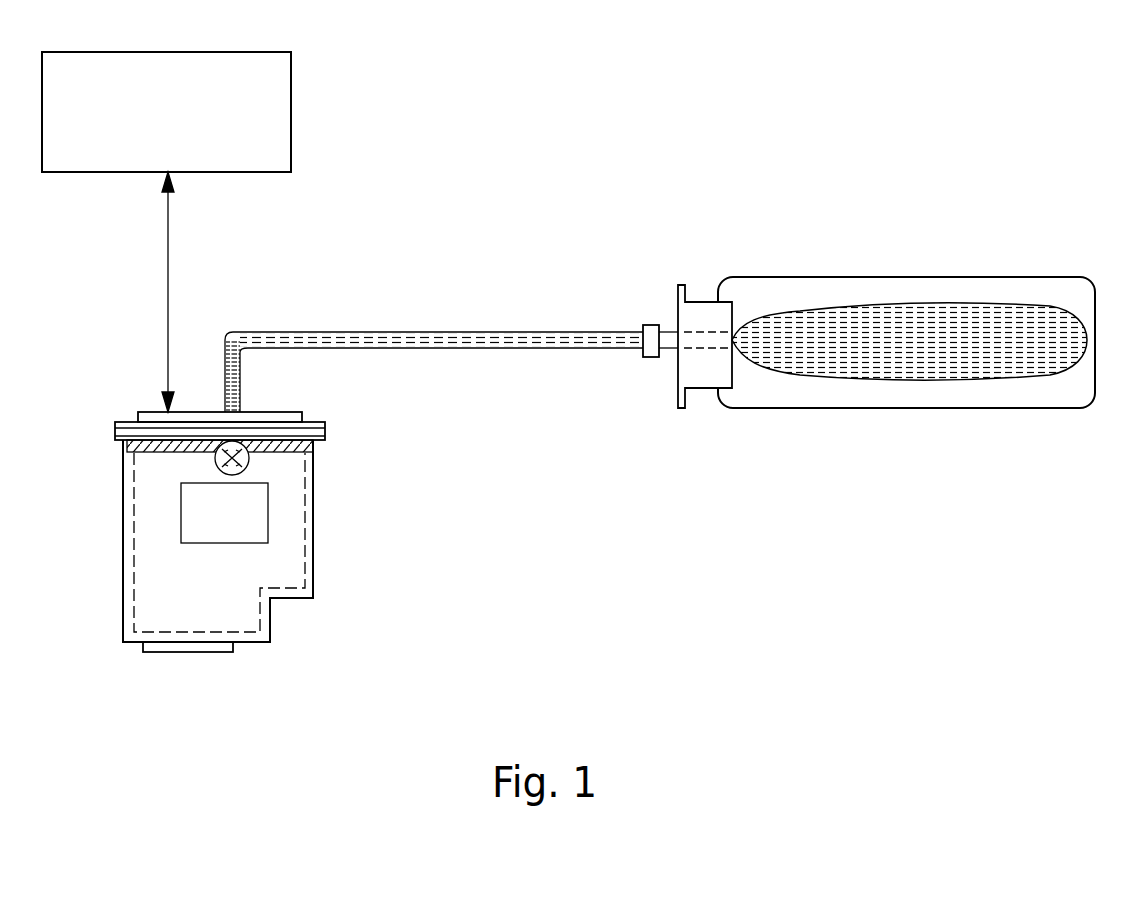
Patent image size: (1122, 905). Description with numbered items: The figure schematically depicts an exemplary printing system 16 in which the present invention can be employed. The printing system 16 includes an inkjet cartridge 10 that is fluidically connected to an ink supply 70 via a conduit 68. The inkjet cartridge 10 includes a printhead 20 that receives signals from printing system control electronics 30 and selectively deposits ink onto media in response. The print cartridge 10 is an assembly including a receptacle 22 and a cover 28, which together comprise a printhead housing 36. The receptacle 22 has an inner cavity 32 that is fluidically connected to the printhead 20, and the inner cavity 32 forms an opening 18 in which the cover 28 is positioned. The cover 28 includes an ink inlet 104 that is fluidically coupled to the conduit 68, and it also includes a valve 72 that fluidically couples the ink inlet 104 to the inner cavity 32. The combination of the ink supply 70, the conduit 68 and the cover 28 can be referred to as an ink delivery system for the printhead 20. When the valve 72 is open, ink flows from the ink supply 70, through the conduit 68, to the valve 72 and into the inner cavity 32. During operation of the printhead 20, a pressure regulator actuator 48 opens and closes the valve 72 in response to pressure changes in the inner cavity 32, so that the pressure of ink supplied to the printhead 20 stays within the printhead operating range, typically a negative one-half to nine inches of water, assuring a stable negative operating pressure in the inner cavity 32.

The inkjet cartridge 10 is at (224, 555).
The printing system 16 is at (811, 435).
The opening 18 is at (216, 455).
The printhead 20 is at (182, 653).
The receptacle 22 is at (287, 570).
The cover 28 is at (148, 422).
The printing system control electronics 30 is at (258, 52).
The inner cavity 32 is at (173, 548).
The printhead housing 36 is at (325, 427).
The pressure regulator actuator 48 is at (185, 512).
The conduit 68 is at (515, 332).
The ink supply 70 is at (953, 351).
The valve 72 is at (115, 438).
The ink inlet 104 is at (237, 412).